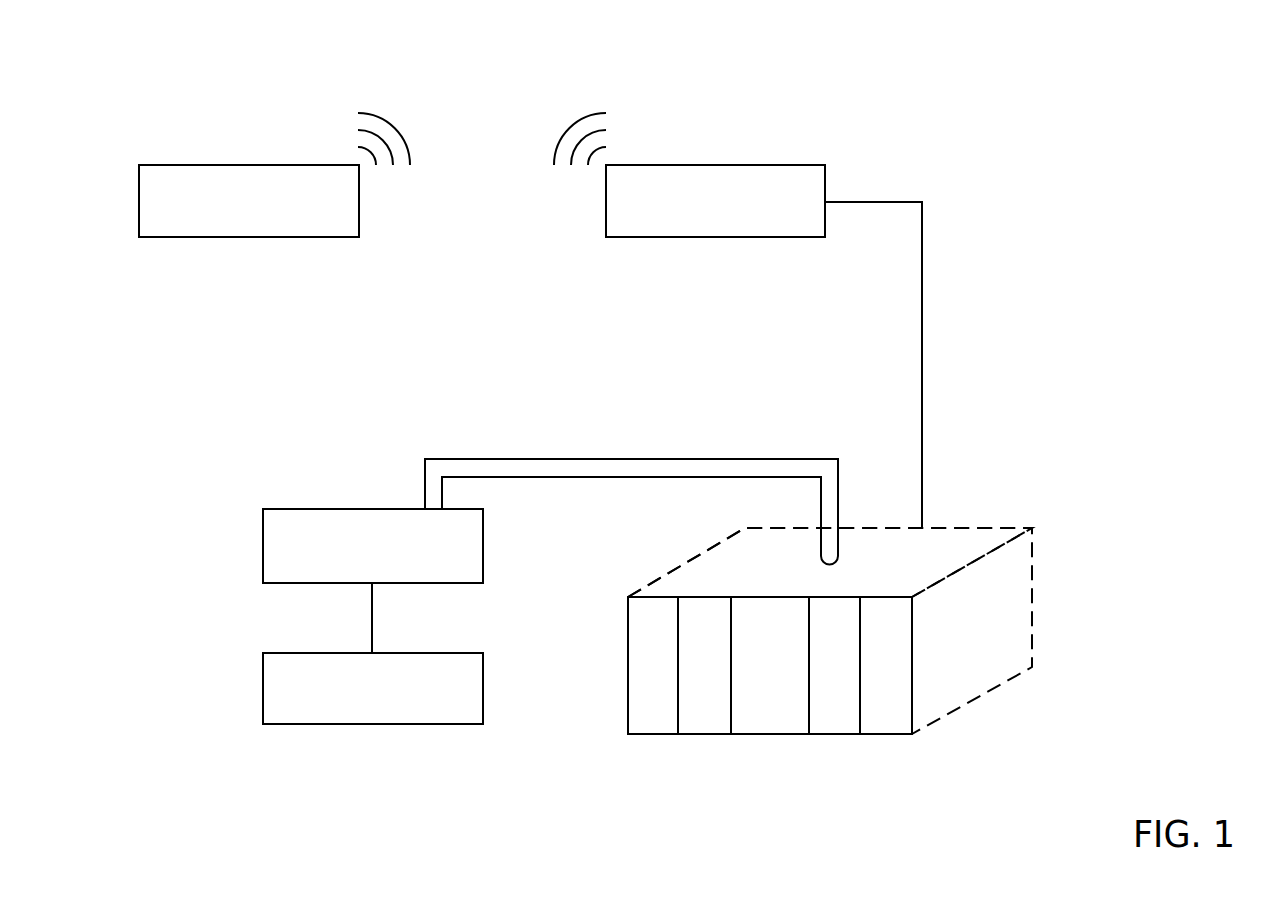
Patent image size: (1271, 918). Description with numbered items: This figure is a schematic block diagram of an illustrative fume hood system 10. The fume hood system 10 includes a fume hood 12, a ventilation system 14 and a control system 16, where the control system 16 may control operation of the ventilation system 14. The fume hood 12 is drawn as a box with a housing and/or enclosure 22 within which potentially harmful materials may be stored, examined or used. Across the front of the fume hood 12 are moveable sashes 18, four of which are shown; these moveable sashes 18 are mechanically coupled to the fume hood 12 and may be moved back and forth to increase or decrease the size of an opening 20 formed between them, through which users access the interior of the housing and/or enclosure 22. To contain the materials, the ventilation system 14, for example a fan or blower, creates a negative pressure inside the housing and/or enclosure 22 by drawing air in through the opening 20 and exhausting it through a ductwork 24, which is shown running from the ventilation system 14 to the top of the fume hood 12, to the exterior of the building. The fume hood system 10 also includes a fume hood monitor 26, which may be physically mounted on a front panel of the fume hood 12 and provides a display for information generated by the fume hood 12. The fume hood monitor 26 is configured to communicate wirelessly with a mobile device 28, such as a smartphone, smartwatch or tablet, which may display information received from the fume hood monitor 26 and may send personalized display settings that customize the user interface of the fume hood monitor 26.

The fume hood system 10 is at (1038, 84).
The fume hood 12 is at (952, 520).
The ventilation system 14 is at (263, 548).
The control system 16 is at (263, 688).
The moveable sashes 18 is at (653, 725).
The opening 20 is at (783, 681).
The housing and/or enclosure 22 is at (698, 556).
The ductwork 24 is at (812, 458).
The fume hood monitor 26 is at (715, 238).
The mobile device 28 is at (247, 238).